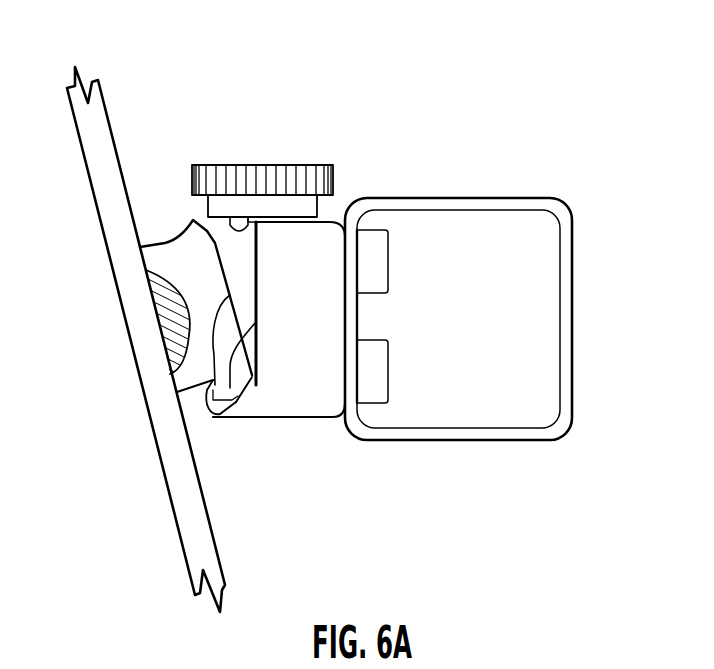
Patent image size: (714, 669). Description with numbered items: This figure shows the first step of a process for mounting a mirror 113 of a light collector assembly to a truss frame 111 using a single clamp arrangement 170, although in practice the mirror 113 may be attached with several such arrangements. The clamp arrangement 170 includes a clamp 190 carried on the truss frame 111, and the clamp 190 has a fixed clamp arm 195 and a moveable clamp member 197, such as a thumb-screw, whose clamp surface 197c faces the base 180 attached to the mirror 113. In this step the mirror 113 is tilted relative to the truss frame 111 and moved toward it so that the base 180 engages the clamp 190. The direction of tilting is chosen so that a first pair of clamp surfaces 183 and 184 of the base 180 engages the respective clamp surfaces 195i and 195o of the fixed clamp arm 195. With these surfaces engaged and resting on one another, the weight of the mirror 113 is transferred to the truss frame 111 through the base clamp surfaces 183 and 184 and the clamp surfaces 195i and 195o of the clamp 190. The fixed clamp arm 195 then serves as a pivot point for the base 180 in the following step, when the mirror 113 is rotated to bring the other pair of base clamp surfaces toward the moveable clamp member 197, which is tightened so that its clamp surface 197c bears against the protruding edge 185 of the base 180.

The mirror 113 is at (74, 68).
The base 180 is at (157, 245).
The protruding edge 185 is at (193, 220).
The moveable clamp member 197 is at (300, 164).
The clamp surface 197c is at (240, 228).
The clamp 190 is at (334, 222).
The clamp surface 184 is at (220, 320).
The clamp surface 183 is at (236, 364).
The fixed clamp arm 195 is at (217, 406).
The clamp surface 195i is at (250, 405).
The clamp surface 195o is at (243, 416).
The truss frame 111 is at (573, 290).
The clamp arrangement 170 is at (461, 468).